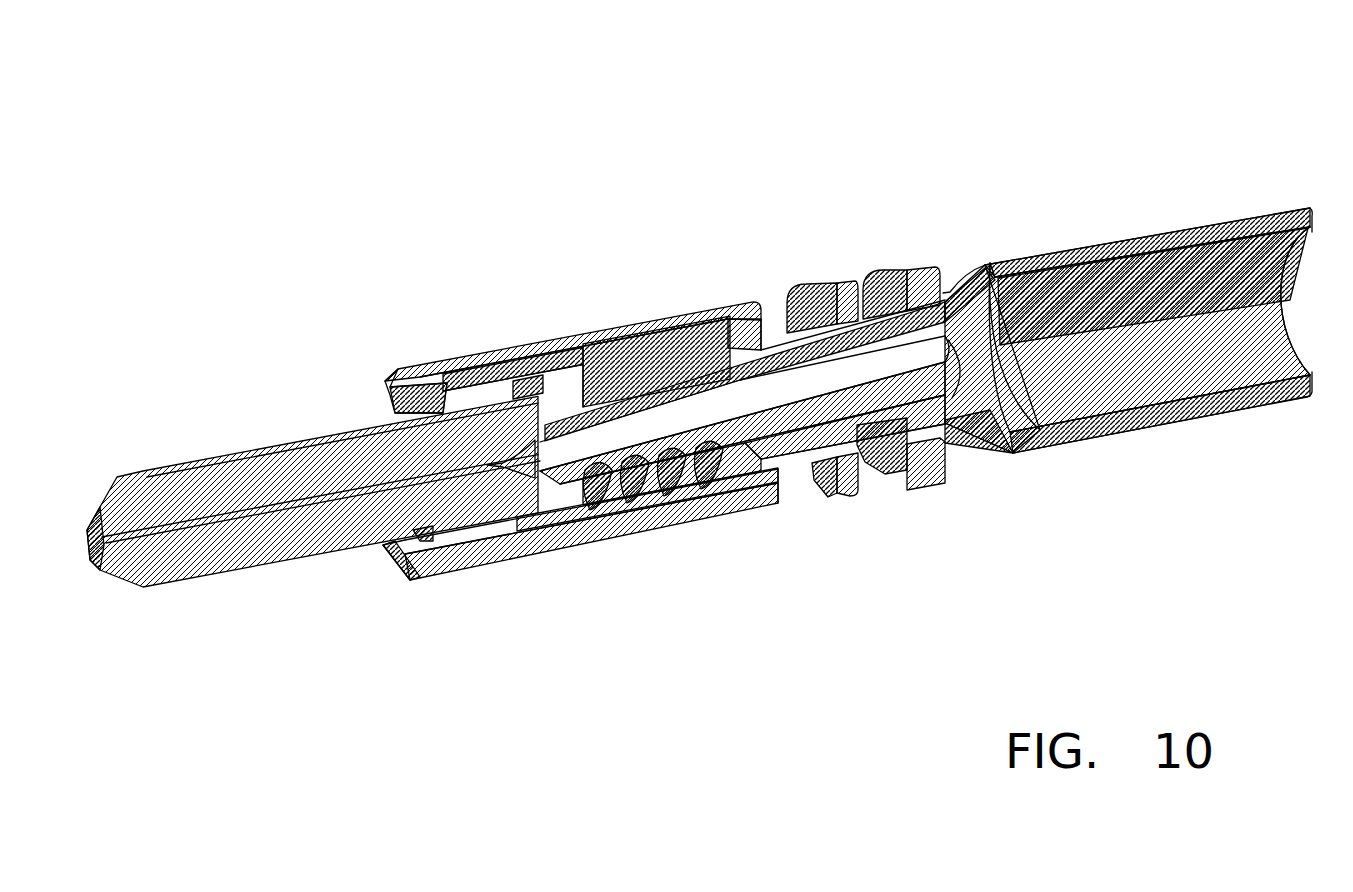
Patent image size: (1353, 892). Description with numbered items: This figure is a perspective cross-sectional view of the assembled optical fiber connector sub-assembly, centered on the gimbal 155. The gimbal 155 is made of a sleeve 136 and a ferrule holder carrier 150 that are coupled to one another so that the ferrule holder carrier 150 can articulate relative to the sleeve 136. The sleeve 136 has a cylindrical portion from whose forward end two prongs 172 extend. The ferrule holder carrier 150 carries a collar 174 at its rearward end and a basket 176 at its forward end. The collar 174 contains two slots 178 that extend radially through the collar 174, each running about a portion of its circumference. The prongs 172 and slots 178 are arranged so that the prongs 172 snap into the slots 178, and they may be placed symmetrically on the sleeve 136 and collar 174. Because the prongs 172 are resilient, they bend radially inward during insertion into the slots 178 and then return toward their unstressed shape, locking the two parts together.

The sleeve 136 is at (1146, 236).
The ferrule holder carrier 150 is at (700, 526).
The gimbal 155 is at (702, 193).
The prongs 172 is at (862, 290).
The collar 174 is at (943, 463).
The basket 176 is at (523, 352).
The slots 178 is at (881, 265).